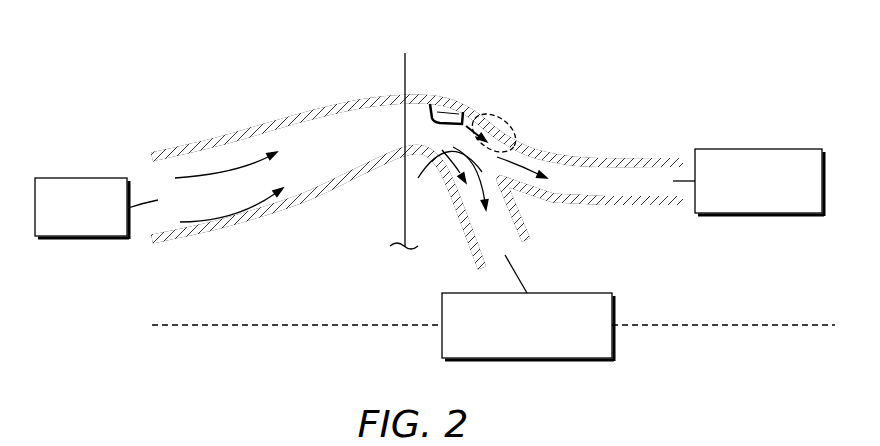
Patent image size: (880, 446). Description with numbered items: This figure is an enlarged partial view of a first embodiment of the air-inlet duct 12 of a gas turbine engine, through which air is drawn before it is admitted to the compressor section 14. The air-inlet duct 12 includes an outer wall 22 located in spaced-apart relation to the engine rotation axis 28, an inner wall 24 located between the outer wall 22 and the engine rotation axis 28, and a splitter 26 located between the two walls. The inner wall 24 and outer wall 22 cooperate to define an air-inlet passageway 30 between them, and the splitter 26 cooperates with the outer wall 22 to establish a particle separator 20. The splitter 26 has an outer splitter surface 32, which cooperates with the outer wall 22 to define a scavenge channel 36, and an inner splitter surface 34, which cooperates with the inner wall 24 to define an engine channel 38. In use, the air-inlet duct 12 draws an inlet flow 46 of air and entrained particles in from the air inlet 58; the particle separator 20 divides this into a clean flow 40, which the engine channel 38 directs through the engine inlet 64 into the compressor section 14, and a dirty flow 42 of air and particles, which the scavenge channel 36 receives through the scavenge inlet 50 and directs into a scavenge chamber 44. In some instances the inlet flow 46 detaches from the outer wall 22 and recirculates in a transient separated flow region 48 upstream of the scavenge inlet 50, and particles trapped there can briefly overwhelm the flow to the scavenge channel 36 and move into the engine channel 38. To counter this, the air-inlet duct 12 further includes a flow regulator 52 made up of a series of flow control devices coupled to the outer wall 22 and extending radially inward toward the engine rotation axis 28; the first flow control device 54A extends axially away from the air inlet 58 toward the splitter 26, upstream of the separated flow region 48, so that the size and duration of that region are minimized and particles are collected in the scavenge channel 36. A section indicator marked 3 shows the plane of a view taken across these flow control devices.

The air-inlet duct 12 is at (582, 105).
The compressor section 14 is at (528, 359).
The particle separator 20 is at (527, 210).
The outer wall 22 is at (193, 153).
The inner wall 24 is at (273, 221).
The splitter 26 is at (505, 230).
The engine rotation axis 28 is at (223, 327).
The air-inlet passageway 30 is at (166, 212).
The outer splitter surface 32 is at (624, 203).
The inner splitter surface 34 is at (503, 207).
The scavenge channel 36 is at (605, 182).
The engine channel 38 is at (452, 168).
The clean flow 40 is at (473, 193).
The dirty flow 42 is at (530, 163).
The scavenge chamber 44 is at (760, 214).
The inlet flow 46 is at (256, 201).
The separated flow region 48 is at (494, 120).
The scavenge inlet 50 is at (523, 150).
The flow regulator 52 is at (463, 97).
The first flow control device 54A is at (440, 108).
The air inlet 58 is at (82, 238).
The engine inlet 64 is at (443, 178).
The section line 3 is at (422, 64).